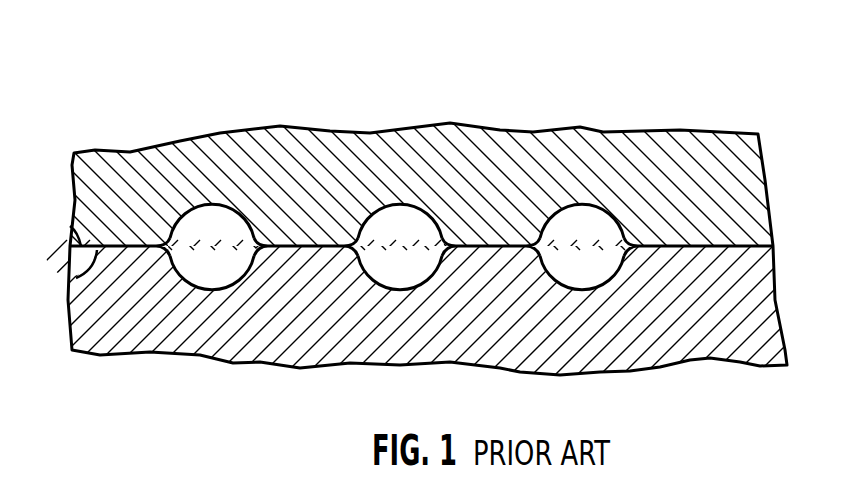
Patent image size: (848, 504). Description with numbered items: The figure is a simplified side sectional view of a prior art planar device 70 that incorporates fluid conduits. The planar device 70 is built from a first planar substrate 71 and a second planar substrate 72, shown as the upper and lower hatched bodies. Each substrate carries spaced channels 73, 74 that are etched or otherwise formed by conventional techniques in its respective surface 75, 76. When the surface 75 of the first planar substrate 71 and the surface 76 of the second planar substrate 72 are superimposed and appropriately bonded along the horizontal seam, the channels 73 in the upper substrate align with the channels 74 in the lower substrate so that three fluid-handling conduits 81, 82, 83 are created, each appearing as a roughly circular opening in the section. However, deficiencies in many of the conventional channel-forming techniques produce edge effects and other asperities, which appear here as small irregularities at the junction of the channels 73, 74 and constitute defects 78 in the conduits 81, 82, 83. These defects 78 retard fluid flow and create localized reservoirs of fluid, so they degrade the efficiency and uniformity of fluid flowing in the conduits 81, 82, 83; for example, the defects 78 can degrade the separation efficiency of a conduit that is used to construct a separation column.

The planar device 70 is at (424, 224).
The first planar substrate 71 is at (618, 150).
The second planar substrate 72 is at (463, 338).
The channels 73 is at (198, 205).
The channels 74 is at (205, 292).
The surface 75 is at (68, 223).
The surface 76 is at (77, 275).
The defects 78 is at (350, 228).
The fluid-handling conduit 81 is at (198, 263).
The fluid-handling conduit 82 is at (386, 263).
The fluid-handling conduit 83 is at (568, 263).